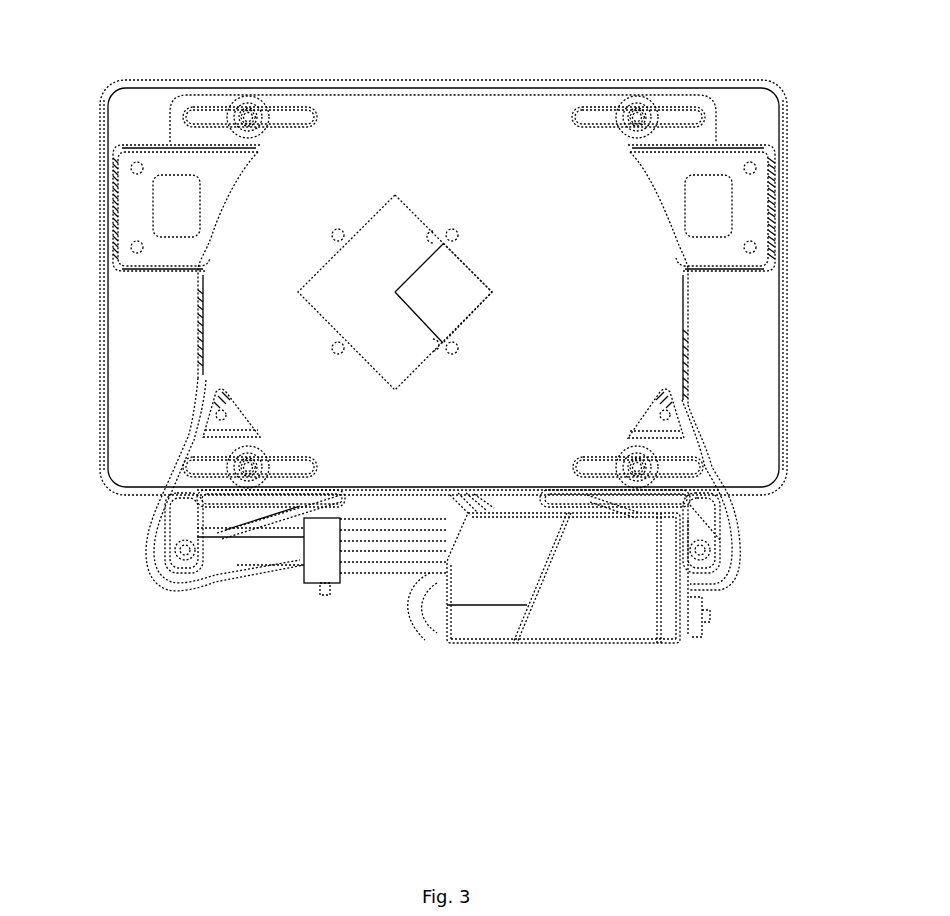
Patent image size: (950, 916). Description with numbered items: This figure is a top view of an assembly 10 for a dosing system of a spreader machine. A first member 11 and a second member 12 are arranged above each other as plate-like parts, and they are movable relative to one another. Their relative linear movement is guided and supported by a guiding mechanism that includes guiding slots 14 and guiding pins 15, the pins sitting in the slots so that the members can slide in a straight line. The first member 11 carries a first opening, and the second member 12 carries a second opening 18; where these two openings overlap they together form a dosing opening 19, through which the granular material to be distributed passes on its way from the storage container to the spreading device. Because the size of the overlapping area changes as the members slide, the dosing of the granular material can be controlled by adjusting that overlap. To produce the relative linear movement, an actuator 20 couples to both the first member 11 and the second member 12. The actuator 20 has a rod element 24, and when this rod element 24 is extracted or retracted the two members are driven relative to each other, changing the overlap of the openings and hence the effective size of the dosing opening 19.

The assembly 10 is at (845, 88).
The first member 11 is at (728, 355).
The second member 12 is at (393, 145).
The guiding slots 14 is at (211, 117).
The guiding pins 15 is at (637, 117).
The second opening 18 is at (310, 304).
The dosing opening 19 is at (462, 305).
The actuator 20 is at (587, 618).
The rod element 24 is at (253, 548).